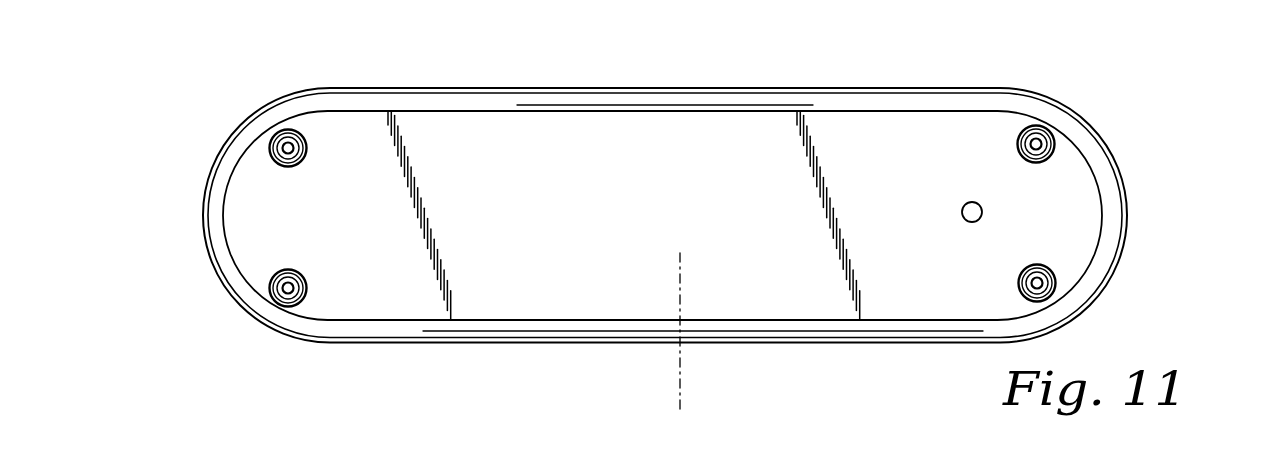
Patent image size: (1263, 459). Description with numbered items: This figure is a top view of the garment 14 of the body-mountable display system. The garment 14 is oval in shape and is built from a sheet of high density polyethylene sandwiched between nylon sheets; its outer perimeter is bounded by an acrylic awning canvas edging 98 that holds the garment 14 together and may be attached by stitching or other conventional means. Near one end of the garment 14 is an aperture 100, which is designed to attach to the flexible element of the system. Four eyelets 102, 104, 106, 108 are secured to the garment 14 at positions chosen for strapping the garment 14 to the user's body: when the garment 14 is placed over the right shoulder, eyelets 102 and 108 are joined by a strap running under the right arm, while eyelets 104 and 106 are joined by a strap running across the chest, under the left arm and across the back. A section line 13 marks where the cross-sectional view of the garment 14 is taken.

The garment 14 is at (1031, 78).
The acrylic awning canvas edging 98 is at (860, 100).
The aperture 100 is at (972, 212).
The eyelet 102 is at (1056, 283).
The eyelet 104 is at (1049, 131).
The eyelet 106 is at (275, 135).
The eyelet 108 is at (292, 300).
The section line 13- 13 is at (688, 258).